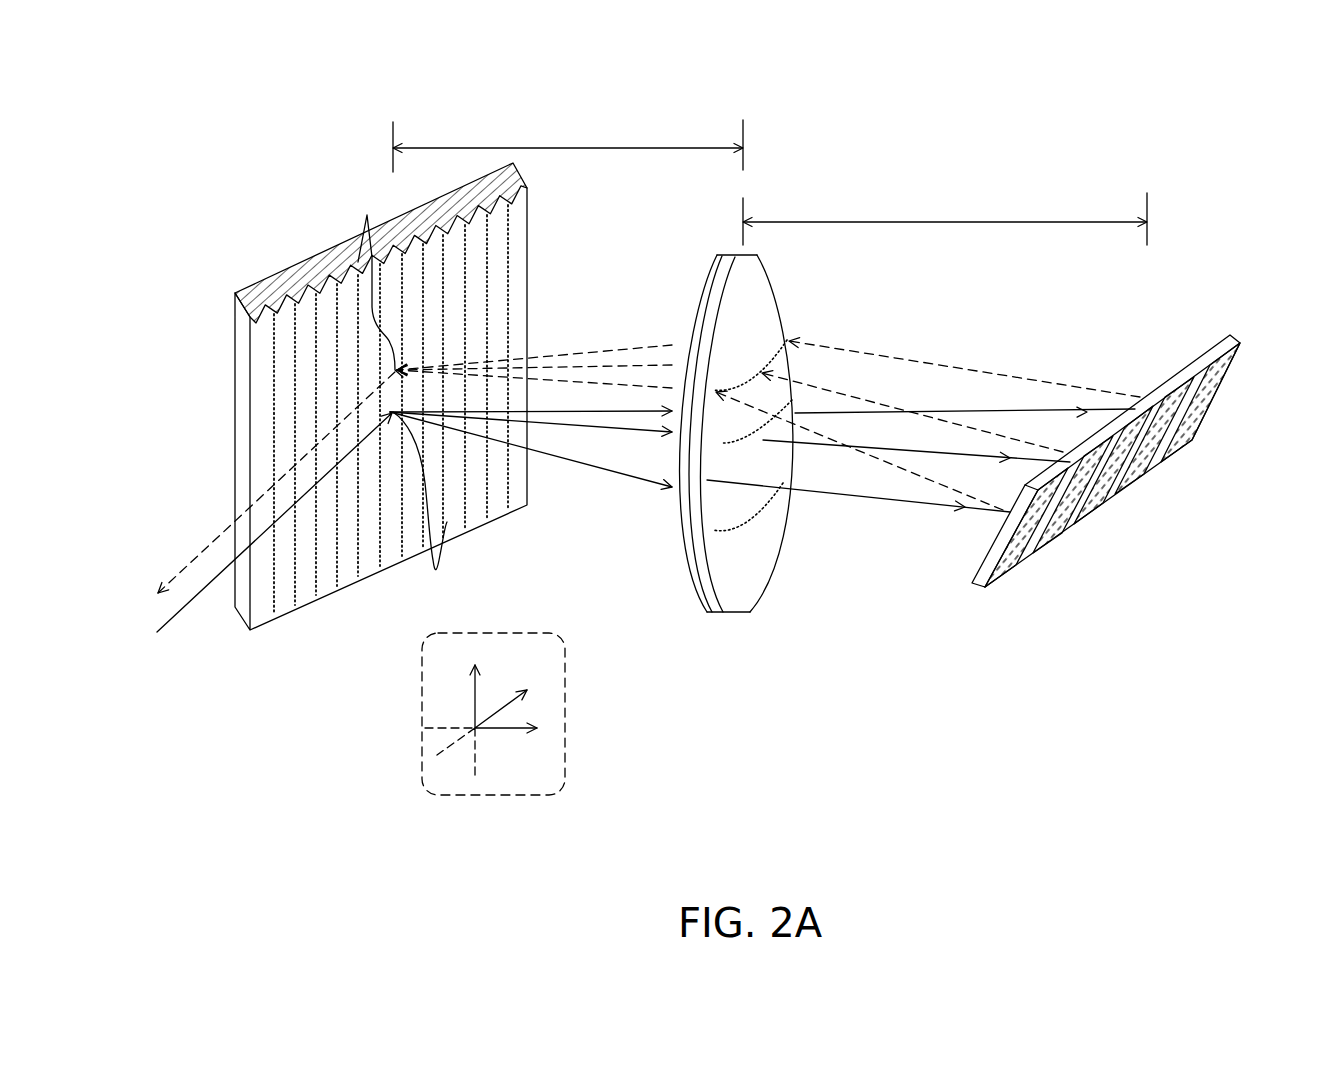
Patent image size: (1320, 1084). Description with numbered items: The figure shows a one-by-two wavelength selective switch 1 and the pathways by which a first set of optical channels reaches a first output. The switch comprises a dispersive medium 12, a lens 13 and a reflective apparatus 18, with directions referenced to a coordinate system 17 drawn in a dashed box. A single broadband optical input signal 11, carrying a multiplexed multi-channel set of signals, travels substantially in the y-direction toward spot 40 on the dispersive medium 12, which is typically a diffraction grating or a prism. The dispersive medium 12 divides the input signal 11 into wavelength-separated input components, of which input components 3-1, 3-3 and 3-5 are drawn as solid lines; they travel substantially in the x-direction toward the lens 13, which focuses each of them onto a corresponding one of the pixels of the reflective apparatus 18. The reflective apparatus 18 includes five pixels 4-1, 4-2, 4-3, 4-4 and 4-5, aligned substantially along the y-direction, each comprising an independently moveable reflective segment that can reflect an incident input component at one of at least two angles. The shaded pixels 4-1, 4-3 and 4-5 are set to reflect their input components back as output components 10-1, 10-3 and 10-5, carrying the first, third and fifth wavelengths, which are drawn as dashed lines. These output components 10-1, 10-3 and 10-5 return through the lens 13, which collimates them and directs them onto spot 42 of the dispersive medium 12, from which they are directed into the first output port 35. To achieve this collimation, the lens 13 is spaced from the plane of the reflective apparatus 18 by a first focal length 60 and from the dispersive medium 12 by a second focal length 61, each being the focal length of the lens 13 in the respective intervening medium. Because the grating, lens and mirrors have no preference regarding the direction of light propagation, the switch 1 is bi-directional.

The 1×2 wavelength selective switch 1 is at (698, 91).
The second focal length 61 is at (552, 148).
The first focal length 60 is at (952, 222).
The dispersive medium 12 is at (308, 262).
The spot 42 is at (356, 239).
The spot 40 is at (447, 522).
The optical input signal 11 is at (185, 605).
The first output port 35 is at (210, 538).
The lens 13 is at (723, 257).
The wavelength-separated input component 3-5 is at (607, 412).
The wavelength-separated input component 3-3 is at (580, 426).
The wavelength-separated input component 3-1 is at (570, 462).
The output component 10-5 is at (845, 349).
The output component 10-3 is at (842, 395).
The output component 10-1 is at (905, 467).
The coordinate system 17 is at (569, 645).
The reflective apparatus 18 is at (1106, 501).
The pixel 4-1 is at (1007, 570).
The pixel 4-2 is at (1045, 547).
The pixel 4-3 is at (1087, 517).
The pixel 4-4 is at (1130, 483).
The pixel 4-5 is at (1173, 450).